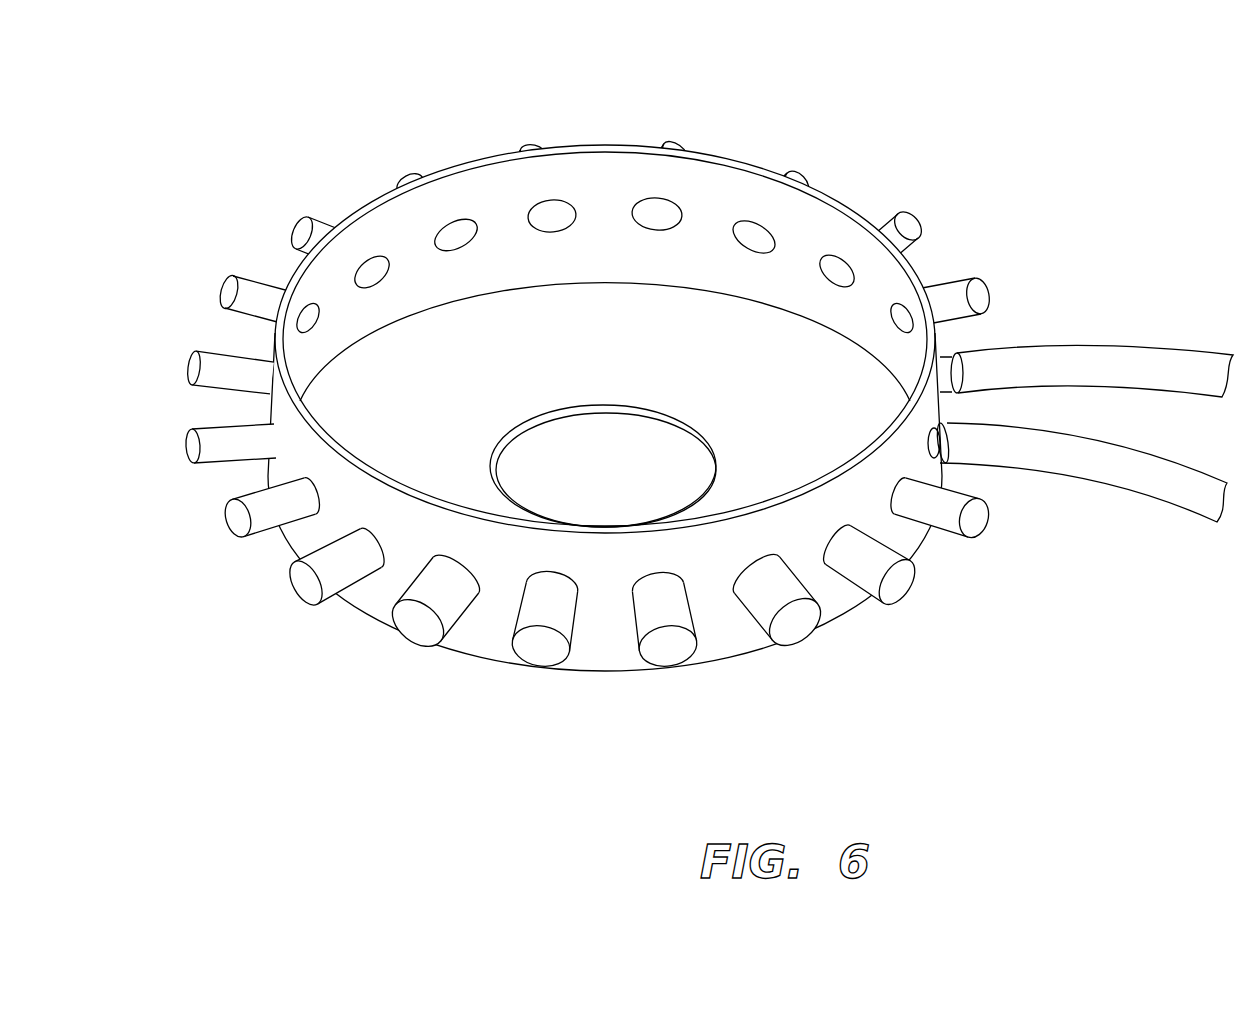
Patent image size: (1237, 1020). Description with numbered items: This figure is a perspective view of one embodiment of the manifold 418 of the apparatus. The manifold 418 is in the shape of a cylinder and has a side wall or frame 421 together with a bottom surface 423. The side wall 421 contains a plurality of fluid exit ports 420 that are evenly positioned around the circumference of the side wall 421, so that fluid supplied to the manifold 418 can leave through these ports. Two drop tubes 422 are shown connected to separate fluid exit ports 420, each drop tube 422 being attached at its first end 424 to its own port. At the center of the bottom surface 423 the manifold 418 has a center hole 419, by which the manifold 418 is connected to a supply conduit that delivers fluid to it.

The manifold 418 is at (427, 124).
The center hole 419 is at (695, 460).
The fluid exit ports 420 is at (550, 207).
The side wall 421 is at (727, 158).
The drop tubes 422 is at (1165, 357).
The bottom surface 423 is at (631, 355).
The first ends 424 is at (980, 330).